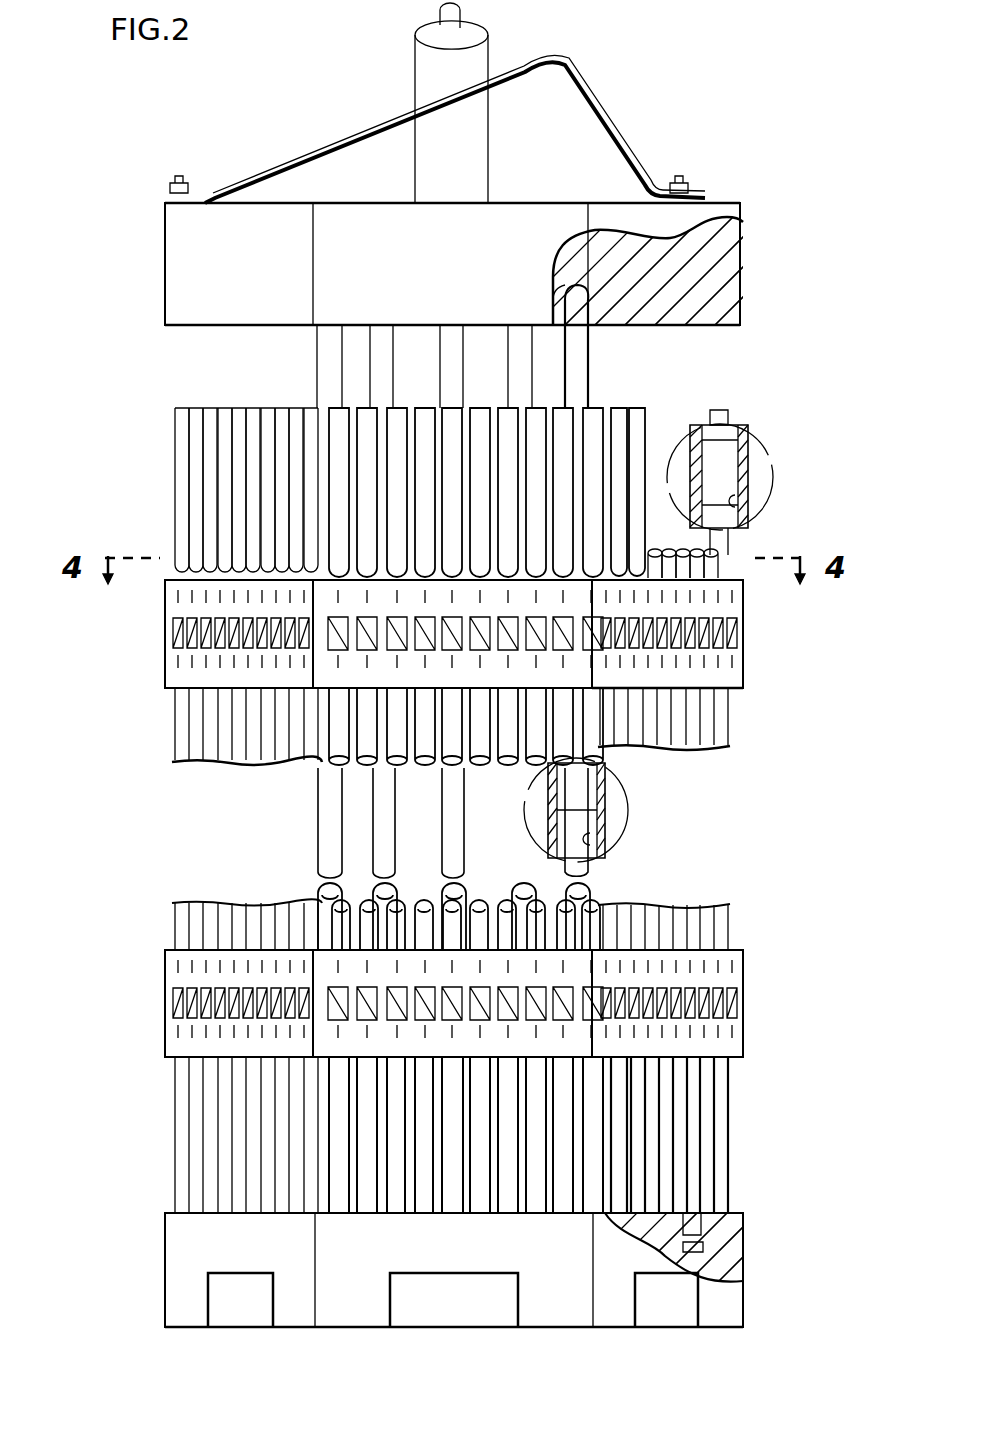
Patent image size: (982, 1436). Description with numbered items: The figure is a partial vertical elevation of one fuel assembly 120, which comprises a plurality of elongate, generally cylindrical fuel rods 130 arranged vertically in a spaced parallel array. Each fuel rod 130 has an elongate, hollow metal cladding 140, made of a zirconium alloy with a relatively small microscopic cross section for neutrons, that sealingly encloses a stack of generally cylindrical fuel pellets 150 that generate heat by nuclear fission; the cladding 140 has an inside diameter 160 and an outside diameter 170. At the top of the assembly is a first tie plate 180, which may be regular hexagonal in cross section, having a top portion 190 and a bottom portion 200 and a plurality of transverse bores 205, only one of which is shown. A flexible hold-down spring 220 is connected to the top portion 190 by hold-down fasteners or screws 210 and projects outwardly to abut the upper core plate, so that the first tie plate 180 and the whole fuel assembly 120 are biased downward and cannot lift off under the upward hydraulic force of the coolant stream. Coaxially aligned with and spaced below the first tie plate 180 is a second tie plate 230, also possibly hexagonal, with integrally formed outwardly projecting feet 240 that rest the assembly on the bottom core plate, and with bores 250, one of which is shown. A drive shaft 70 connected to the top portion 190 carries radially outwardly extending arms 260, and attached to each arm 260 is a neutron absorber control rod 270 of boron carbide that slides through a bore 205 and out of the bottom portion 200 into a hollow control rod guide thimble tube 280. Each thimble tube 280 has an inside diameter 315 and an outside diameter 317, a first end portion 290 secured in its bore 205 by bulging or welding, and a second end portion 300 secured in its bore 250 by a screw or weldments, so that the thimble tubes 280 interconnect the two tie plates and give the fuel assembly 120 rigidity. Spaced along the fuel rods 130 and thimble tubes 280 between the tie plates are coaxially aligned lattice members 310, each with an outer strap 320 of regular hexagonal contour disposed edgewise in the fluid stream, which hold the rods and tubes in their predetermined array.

The drive shaft 70 is at (415, 64).
The fuel assembly 120 is at (165, 632).
The fuel rod 130 is at (728, 414).
The cladding 140 is at (745, 432).
The fuel pellet 150 is at (738, 472).
The inside diameter 160 is at (738, 500).
The outside diameter 170 is at (688, 445).
The first tie plate 180 is at (165, 257).
The top portion 190 is at (165, 216).
The bottom portion 200 is at (175, 330).
The transverse bore 205 is at (560, 298).
The hold-down fastener 210 is at (690, 182).
The hold-down spring 220 is at (597, 108).
The second tie plate 230 is at (745, 1292).
The feet 240 is at (745, 1317).
The bore 250 is at (700, 1237).
The arm 260 is at (558, 277).
The control rod 270 is at (602, 772).
The control rod guide thimble tube 280 is at (330, 362).
The first end portion 290 is at (588, 380).
The second end portion 300 is at (700, 1220).
The lattice member 310 is at (750, 622).
The inside diameter 315 is at (610, 844).
The outside diameter 317 is at (550, 838).
The outer strap 320 is at (745, 661).